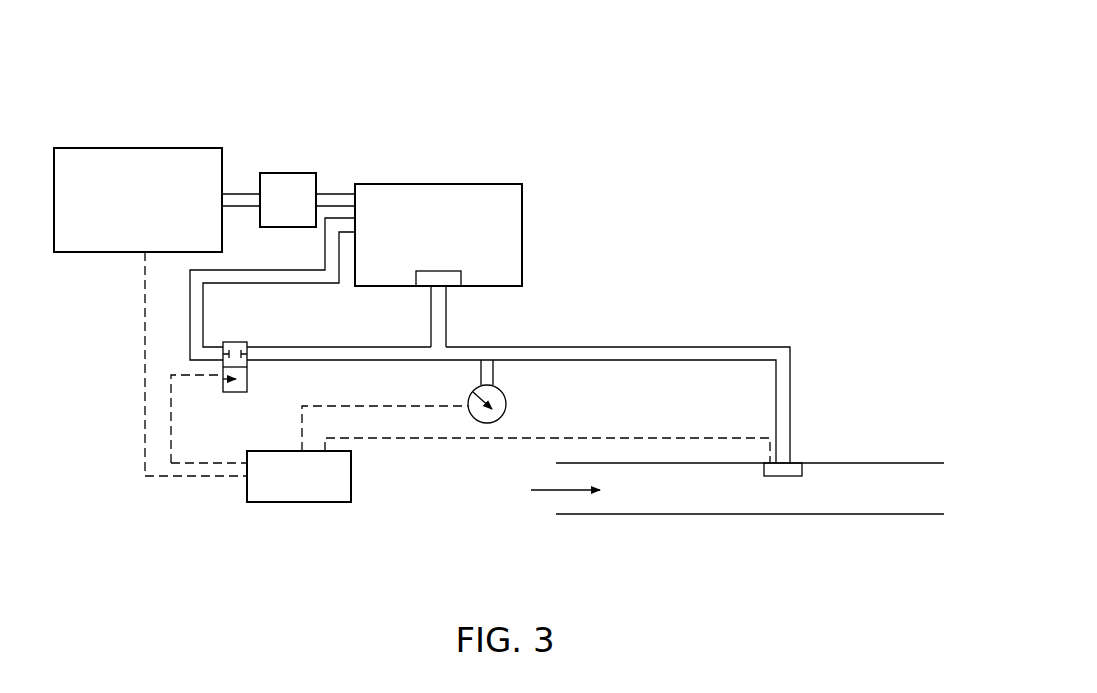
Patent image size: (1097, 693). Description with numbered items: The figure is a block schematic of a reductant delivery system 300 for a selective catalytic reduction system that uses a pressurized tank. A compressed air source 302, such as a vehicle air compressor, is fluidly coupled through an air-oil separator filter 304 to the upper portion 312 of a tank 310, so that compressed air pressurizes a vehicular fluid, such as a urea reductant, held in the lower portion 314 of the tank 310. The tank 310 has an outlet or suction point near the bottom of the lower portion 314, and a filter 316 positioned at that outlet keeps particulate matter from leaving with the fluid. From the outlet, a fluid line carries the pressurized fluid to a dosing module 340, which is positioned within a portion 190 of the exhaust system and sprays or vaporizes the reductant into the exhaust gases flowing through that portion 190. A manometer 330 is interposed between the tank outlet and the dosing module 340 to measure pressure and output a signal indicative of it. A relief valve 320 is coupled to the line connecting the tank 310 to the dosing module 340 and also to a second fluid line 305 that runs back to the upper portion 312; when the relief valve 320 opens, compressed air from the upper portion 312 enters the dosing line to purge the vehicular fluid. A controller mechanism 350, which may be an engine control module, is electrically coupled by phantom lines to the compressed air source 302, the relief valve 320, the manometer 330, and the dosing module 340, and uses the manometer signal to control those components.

The reductant delivery system 300 is at (503, 64).
The compressed air source 302 is at (171, 148).
The air-oil separator filter 304 is at (266, 173).
The fluid line 305 is at (203, 325).
The tank 310 is at (441, 184).
The upper portion 312 is at (350, 188).
The lower portion 314 is at (530, 272).
The filter 316 is at (416, 274).
The relief valve 320 is at (223, 382).
The manometer 330 is at (506, 401).
The dosing module 340 is at (803, 470).
The controller mechanism 350 is at (352, 499).
The portion of an exhaust system 190 is at (736, 530).